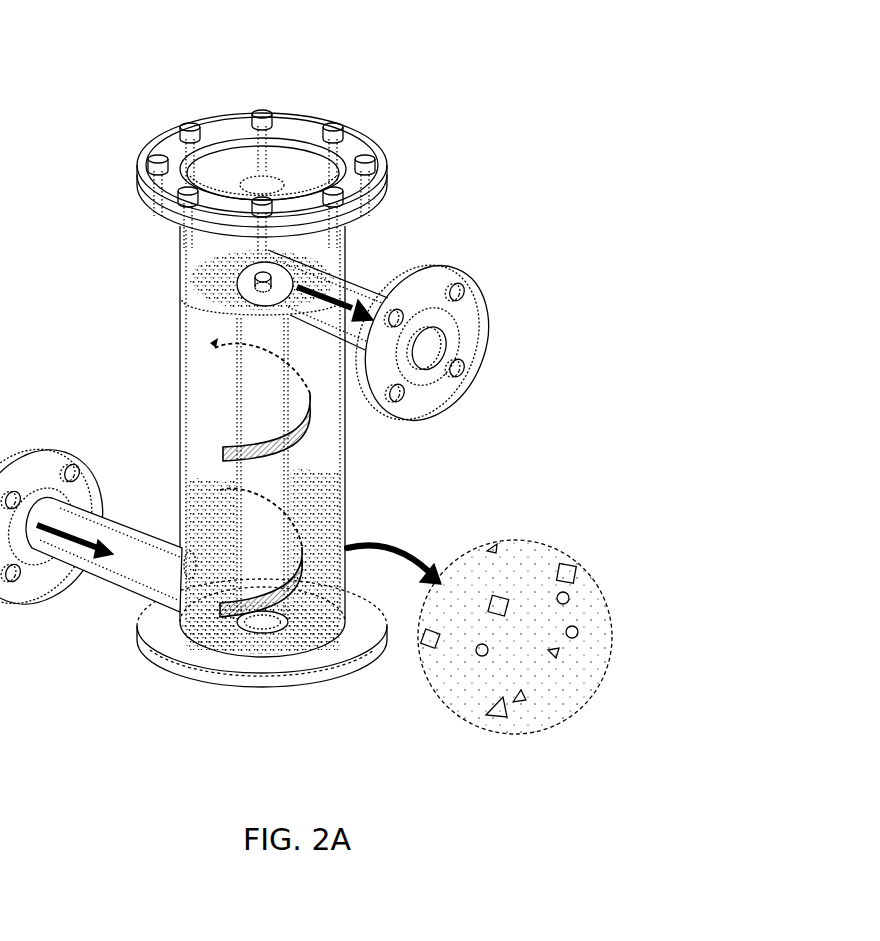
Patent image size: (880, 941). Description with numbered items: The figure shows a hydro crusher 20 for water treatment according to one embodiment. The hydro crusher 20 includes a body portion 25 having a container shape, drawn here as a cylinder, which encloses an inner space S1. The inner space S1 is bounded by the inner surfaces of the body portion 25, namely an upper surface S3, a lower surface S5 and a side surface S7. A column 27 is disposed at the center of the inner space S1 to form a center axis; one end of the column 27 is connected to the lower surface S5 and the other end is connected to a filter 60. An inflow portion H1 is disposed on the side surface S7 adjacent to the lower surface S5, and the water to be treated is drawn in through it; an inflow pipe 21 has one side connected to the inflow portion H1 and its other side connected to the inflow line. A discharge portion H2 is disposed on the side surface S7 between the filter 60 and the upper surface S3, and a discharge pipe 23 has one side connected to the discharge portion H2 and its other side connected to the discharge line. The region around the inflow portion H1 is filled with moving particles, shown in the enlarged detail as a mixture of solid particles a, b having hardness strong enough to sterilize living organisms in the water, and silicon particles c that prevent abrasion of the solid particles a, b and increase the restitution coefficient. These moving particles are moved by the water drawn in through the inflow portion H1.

The hydro crusher 20 is at (325, 105).
The inflow pipe 21 is at (82, 577).
The discharge pipe 23 is at (378, 284).
The body portion 25 is at (345, 517).
The column 27 is at (233, 363).
The filter 60 is at (190, 272).
The inflow portion H1 is at (196, 547).
The discharge portion H2 is at (192, 312).
The inner space S1 is at (318, 468).
The upper surface S3 is at (163, 219).
The lower surface S5 is at (322, 630).
The side surface S7 is at (330, 437).
The solid particle a is at (553, 658).
The solid particle b is at (566, 565).
The silicon particle c is at (480, 656).